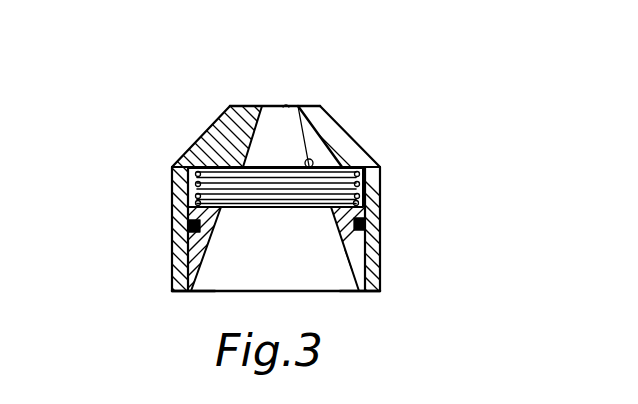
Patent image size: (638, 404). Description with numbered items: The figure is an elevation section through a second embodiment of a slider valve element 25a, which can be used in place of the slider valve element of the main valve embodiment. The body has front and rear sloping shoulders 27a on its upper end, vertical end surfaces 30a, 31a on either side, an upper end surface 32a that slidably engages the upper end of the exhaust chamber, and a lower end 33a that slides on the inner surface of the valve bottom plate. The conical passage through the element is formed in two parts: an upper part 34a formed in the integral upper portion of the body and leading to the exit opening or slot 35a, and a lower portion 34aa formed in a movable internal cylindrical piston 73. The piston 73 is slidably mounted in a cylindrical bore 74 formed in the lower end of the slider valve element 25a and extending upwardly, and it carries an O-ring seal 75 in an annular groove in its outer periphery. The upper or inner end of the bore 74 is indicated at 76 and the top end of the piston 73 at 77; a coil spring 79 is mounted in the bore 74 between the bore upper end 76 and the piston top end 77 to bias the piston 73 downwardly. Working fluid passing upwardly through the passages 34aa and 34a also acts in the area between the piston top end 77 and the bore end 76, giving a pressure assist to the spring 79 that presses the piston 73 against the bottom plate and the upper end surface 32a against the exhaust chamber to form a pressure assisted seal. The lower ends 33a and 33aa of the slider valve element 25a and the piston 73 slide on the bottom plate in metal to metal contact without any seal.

The slider valve element 25a is at (352, 136).
The sloping shoulders 27a is at (202, 138).
The vertical end surface 30a is at (379, 227).
The vertical end surface 31a is at (172, 259).
The upper end surface 32a is at (245, 105).
The lower end 33a is at (372, 292).
The lower end 33aa is at (191, 292).
The upper part of conical passage 34a is at (313, 163).
The lower portion of conical passage 34aa is at (347, 258).
The exit opening or slot 35a is at (288, 107).
The piston 73 is at (366, 244).
The cylindrical bore 74 is at (365, 200).
The O-ring seal 75 is at (189, 225).
The upper end of bore 76 is at (221, 208).
The top end of piston 77 is at (318, 205).
The coil spring 79 is at (289, 190).